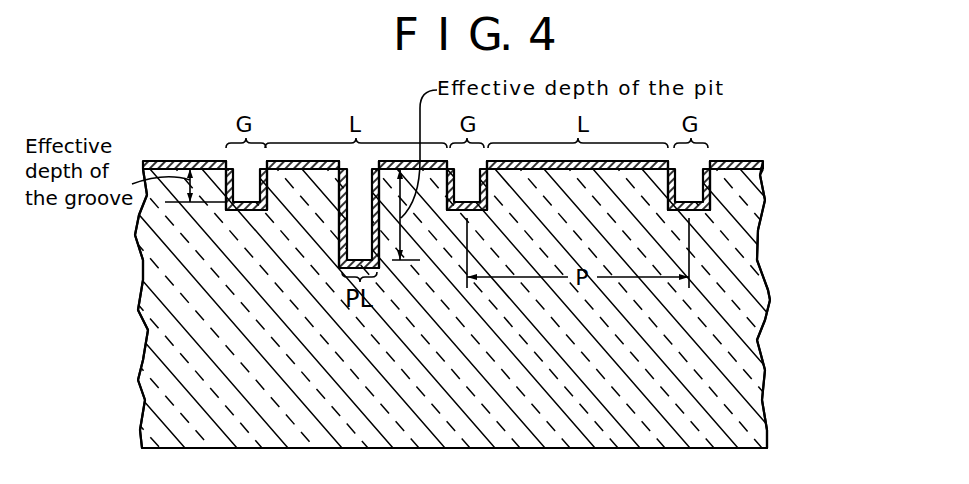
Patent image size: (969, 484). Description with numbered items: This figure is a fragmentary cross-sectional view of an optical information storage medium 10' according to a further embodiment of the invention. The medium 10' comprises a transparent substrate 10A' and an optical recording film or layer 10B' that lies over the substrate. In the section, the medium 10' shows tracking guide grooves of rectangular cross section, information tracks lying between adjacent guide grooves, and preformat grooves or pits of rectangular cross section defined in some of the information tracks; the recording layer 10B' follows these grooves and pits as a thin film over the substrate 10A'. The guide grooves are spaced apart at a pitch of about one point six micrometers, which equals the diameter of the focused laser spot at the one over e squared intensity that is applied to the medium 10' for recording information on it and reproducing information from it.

The optical information storage medium 10' is at (503, 270).
The transparent substrate 10A' is at (487, 304).
The optical recording film 10B' is at (470, 189).